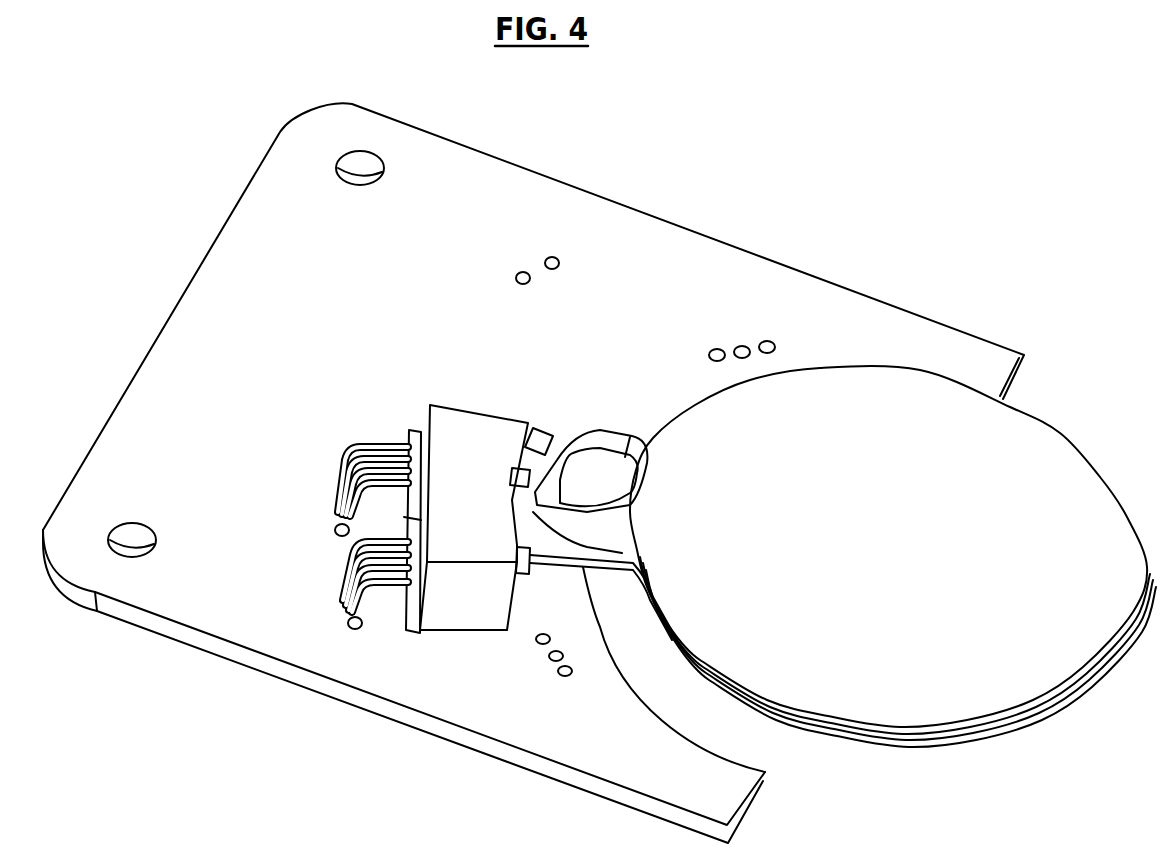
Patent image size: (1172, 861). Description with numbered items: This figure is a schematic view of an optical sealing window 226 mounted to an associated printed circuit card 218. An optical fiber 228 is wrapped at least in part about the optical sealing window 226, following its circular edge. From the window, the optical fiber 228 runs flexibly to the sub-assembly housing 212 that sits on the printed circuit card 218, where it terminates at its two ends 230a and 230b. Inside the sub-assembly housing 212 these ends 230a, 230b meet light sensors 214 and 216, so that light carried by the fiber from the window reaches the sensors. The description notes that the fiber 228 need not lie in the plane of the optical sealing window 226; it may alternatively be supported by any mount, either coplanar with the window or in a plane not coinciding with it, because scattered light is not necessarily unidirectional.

The sub-assembly housing 212 is at (445, 494).
The light sensor 214 is at (477, 483).
The light sensor 216 is at (468, 579).
The printed circuit card 218 is at (507, 193).
The optical sealing window 226 is at (1062, 468).
The optical fiber 228 is at (967, 742).
The end of optical fiber 230a is at (587, 597).
The end of optical fiber 230b is at (563, 483).